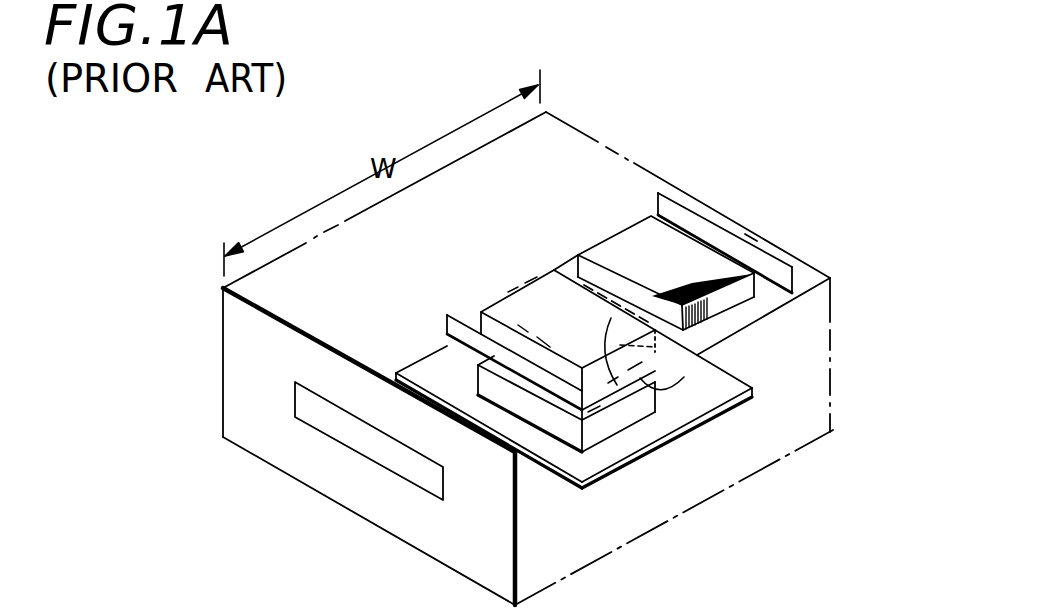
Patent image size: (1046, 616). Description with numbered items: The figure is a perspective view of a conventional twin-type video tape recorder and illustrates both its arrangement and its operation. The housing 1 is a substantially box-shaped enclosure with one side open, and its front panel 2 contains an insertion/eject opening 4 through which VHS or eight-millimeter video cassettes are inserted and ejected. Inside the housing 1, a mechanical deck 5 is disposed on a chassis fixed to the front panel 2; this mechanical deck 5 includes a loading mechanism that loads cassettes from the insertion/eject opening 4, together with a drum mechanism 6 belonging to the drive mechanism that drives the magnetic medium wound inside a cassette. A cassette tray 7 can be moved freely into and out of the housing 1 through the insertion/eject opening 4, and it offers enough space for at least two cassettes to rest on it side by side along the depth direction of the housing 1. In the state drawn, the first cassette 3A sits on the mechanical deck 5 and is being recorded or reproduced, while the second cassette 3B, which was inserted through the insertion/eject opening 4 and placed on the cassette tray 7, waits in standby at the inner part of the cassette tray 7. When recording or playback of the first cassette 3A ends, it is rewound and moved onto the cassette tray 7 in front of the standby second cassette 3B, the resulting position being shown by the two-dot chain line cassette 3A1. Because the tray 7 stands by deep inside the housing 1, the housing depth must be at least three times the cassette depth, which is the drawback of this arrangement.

The housing 1 is at (784, 443).
The front panel 2 is at (388, 518).
The first cassette 3A is at (626, 420).
The first cassette in two-dot chain line position 3A1 is at (505, 308).
The second cassette 3B is at (690, 268).
The insertion/eject opening 4 is at (322, 422).
The mechanical deck 5 is at (705, 398).
The drum mechanism 6 is at (682, 378).
The cassette tray 7 is at (681, 220).